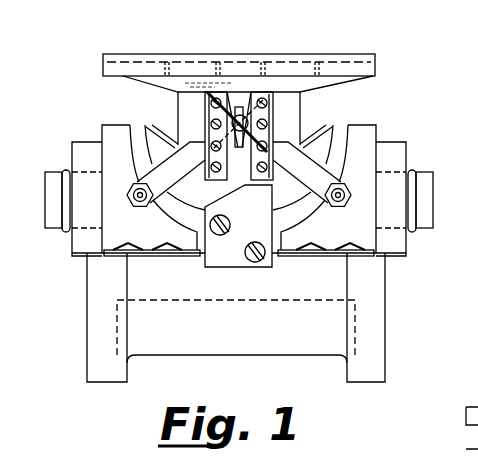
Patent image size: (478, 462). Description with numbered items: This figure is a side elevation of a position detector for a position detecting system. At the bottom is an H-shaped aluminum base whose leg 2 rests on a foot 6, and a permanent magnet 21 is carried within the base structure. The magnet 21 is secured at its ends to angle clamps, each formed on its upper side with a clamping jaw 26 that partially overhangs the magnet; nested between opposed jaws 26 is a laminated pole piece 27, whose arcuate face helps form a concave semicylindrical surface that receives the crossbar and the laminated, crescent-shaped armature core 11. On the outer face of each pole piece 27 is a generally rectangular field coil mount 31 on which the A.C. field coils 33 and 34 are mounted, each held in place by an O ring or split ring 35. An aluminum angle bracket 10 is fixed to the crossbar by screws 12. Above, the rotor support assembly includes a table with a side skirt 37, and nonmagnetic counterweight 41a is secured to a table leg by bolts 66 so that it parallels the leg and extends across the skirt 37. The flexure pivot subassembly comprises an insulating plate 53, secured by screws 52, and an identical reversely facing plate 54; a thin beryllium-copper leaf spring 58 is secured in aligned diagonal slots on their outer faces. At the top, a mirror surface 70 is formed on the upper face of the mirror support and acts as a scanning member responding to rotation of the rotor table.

The mirror surface 70 is at (258, 54).
The side skirt 37 is at (181, 103).
The armature core 11 is at (150, 128).
The pole piece 27 is at (132, 231).
The counterweight 41a is at (177, 181).
The bolt 66 is at (135, 187).
The screw 52 is at (210, 163).
The insulating plate 53 is at (206, 122).
The insulating plate 54 is at (273, 101).
The leaf spring 58 is at (273, 131).
The angle bracket 10 is at (258, 224).
The screw 12 is at (216, 235).
The clamping jaw 26 is at (330, 246).
The A.C. field coil 34 is at (87, 142).
The A.C. field coil 33 is at (402, 146).
The split ring 35 is at (412, 233).
The field coil mount 31 is at (47, 202).
The foot 6 is at (124, 373).
The leg 2 is at (237, 344).
The permanent magnet 21 is at (358, 317).